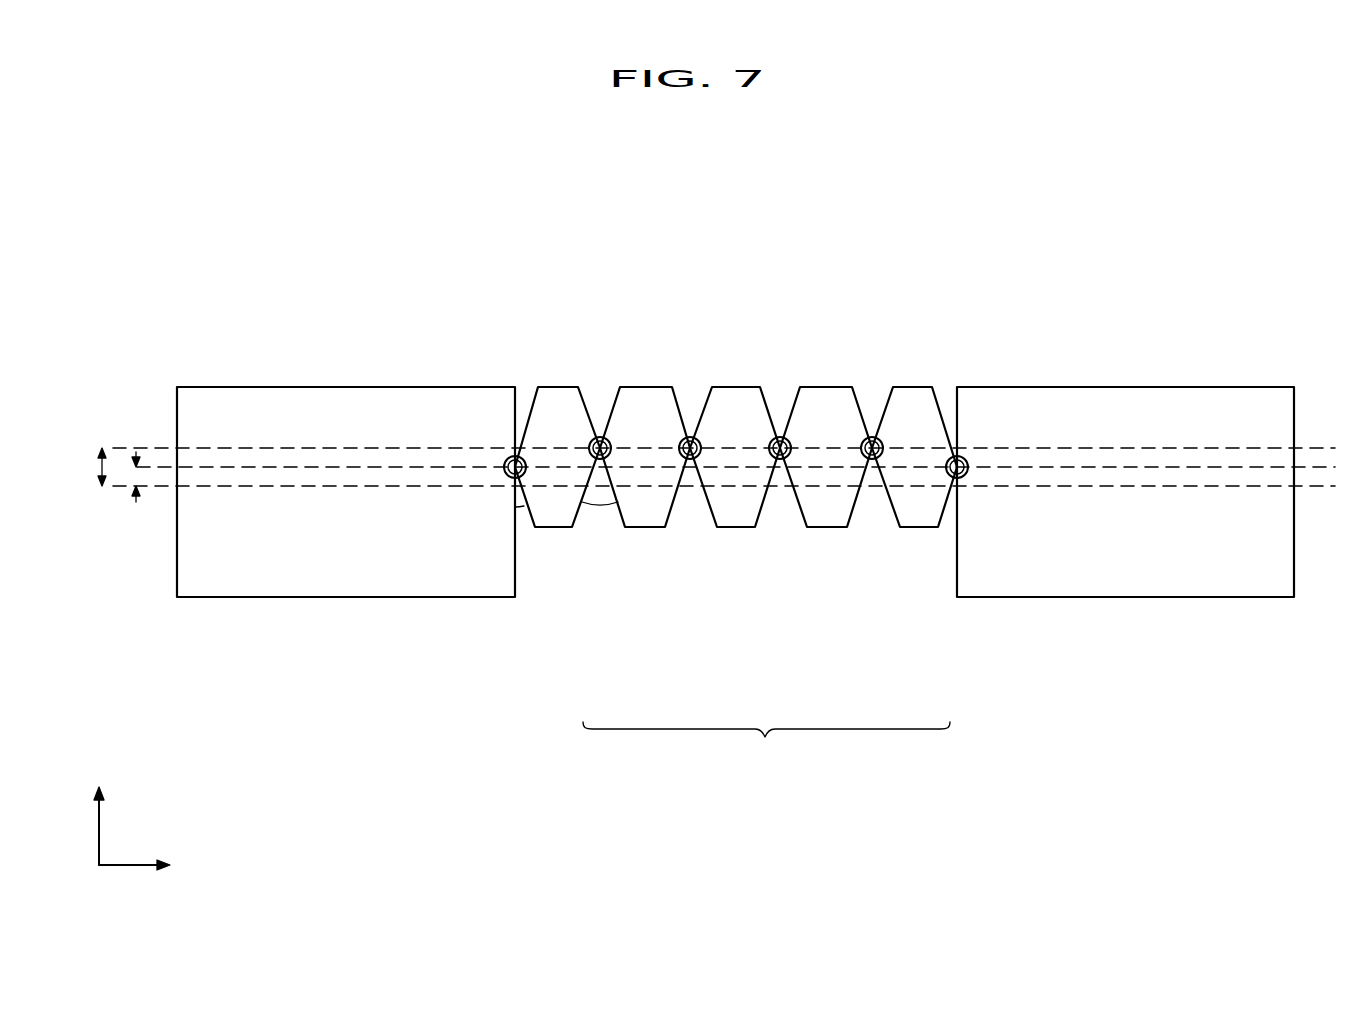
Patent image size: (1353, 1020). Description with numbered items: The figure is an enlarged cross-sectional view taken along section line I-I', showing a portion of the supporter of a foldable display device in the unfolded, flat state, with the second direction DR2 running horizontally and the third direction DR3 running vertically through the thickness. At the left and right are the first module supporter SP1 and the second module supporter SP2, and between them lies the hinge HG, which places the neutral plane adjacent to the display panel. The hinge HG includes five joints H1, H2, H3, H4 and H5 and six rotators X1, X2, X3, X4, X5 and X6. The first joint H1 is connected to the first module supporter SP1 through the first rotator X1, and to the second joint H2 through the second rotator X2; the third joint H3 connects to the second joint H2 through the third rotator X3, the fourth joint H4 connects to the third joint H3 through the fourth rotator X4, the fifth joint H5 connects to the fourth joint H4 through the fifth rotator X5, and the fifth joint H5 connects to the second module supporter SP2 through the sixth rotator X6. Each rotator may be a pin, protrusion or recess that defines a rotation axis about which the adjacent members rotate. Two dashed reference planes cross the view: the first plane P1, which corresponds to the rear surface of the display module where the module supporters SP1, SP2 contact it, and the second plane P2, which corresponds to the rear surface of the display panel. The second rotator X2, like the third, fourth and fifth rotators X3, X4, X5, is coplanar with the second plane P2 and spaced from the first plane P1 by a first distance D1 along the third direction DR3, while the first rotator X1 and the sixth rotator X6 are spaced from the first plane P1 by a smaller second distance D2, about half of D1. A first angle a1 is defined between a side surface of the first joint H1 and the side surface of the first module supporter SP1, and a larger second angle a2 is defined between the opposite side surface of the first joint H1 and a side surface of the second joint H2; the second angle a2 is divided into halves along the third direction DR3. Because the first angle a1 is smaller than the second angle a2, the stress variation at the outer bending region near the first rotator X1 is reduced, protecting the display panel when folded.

The first module supporter SP1 is at (362, 582).
The second module supporter SP2 is at (1138, 582).
The first plane P1 is at (350, 492).
The second plane P2 is at (258, 447).
The first joint H1 is at (555, 518).
The second joint H2 is at (647, 518).
The third joint H3 is at (737, 513).
The fourth joint H4 is at (825, 513).
The fifth joint H5 is at (917, 513).
The hinge HG is at (766, 750).
The first rotator X1 is at (508, 460).
The second rotator X2 is at (600, 437).
The third rotator X3 is at (690, 437).
The fourth rotator X4 is at (780, 437).
The fifth rotator X5 is at (872, 437).
The sixth rotator X6 is at (966, 461).
The first angle a1 is at (520, 503).
The second angle a2 is at (598, 507).
The first distance D1 is at (97, 468).
The second distance D2 is at (135, 478).
The section line I-I' I is at (177, 620).
The section line I- I' is at (1294, 620).
The second direction DR2 is at (159, 865).
The third direction DR3 is at (99, 812).